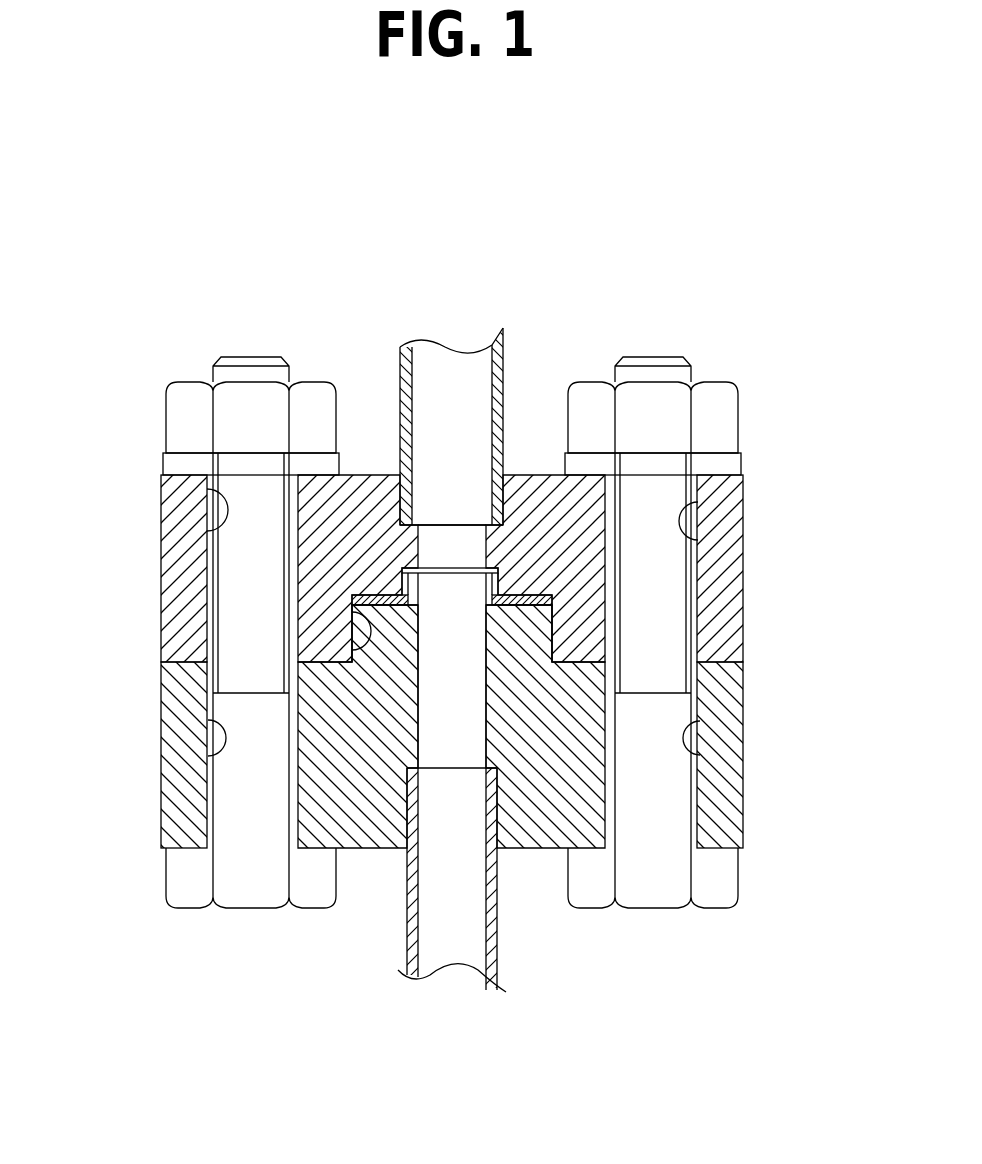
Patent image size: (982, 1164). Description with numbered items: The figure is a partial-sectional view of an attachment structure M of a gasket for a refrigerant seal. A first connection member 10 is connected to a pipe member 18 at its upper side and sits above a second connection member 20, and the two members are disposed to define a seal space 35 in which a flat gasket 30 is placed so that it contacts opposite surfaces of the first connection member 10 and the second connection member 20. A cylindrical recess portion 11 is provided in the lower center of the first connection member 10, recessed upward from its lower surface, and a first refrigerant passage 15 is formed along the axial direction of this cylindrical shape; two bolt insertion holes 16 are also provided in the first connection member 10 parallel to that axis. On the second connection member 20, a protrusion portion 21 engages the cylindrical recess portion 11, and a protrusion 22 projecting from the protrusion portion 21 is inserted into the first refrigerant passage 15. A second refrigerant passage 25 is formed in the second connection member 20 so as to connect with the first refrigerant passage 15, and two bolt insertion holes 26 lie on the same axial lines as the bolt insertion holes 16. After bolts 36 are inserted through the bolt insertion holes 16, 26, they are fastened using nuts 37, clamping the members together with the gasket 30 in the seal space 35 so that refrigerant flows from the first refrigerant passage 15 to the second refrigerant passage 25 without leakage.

The attachment structure M is at (590, 290).
The first connection member 10 is at (769, 481).
The cylindrical recess portion 11 is at (352, 612).
The first refrigerant passage 15 is at (452, 550).
The bolt insertion holes 16 is at (208, 531).
The pipe member 18 is at (400, 368).
The second connection member 20 is at (768, 687).
The protrusion portion 21 is at (517, 622).
The protrusion 22 is at (408, 582).
The second refrigerant passage 25 is at (437, 733).
The bolt insertion holes 26 is at (208, 757).
The flat gasket 30 is at (510, 594).
The seal space 35 is at (553, 635).
The bolts 36 is at (183, 877).
The nuts 37 is at (182, 413).